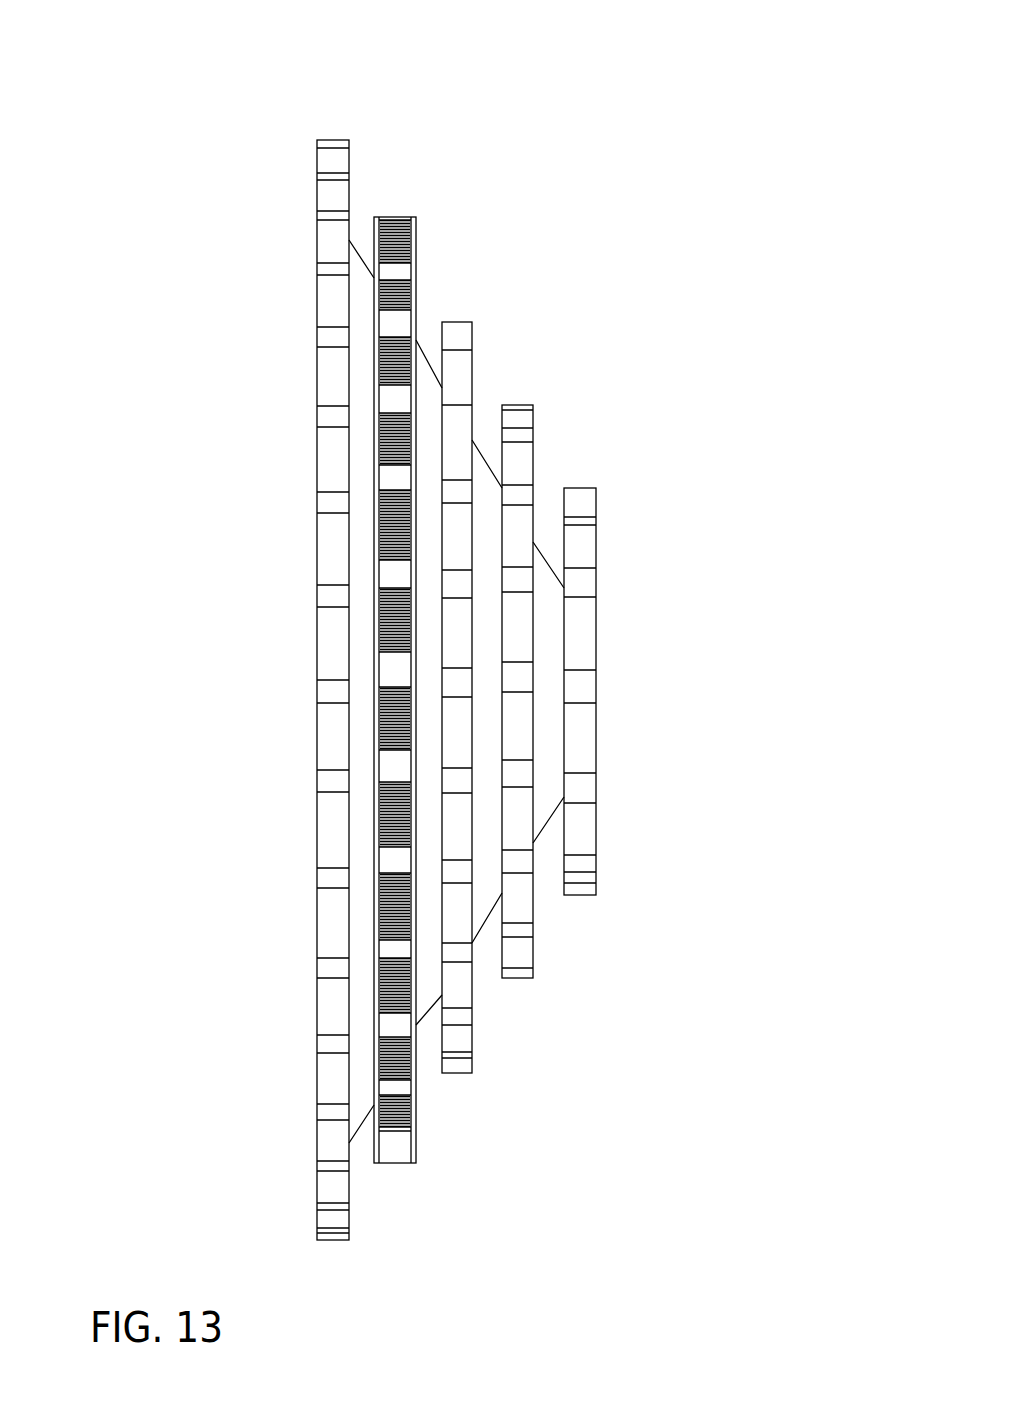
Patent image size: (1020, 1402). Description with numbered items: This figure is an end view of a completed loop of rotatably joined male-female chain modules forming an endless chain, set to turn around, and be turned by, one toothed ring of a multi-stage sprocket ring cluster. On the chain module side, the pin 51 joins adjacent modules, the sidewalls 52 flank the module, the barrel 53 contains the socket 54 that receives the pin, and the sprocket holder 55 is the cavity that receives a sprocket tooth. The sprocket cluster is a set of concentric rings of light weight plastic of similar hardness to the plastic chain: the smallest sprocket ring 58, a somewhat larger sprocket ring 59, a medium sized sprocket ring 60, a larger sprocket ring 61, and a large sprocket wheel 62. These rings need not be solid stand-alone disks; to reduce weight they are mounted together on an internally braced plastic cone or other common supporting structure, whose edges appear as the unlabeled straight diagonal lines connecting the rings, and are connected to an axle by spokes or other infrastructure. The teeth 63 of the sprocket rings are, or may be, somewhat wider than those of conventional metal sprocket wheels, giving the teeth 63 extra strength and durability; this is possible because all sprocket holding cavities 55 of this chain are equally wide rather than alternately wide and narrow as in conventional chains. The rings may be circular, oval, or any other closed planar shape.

The large sprocket wheel 62 is at (353, 187).
The sprocket wheel cluster's teeth 63 is at (317, 263).
The larger sprocket ring 61 is at (397, 215).
The pin 51 is at (415, 252).
The sidewalls 52 is at (415, 269).
The sprocket holder 55 is at (414, 1023).
The barrel 53 is at (414, 1060).
The socket 54 is at (414, 1110).
The medium sized sprocket ring 60 is at (474, 374).
The somewhat larger sprocket ring 59 is at (535, 450).
The smallest sprocket ring 58 is at (598, 547).